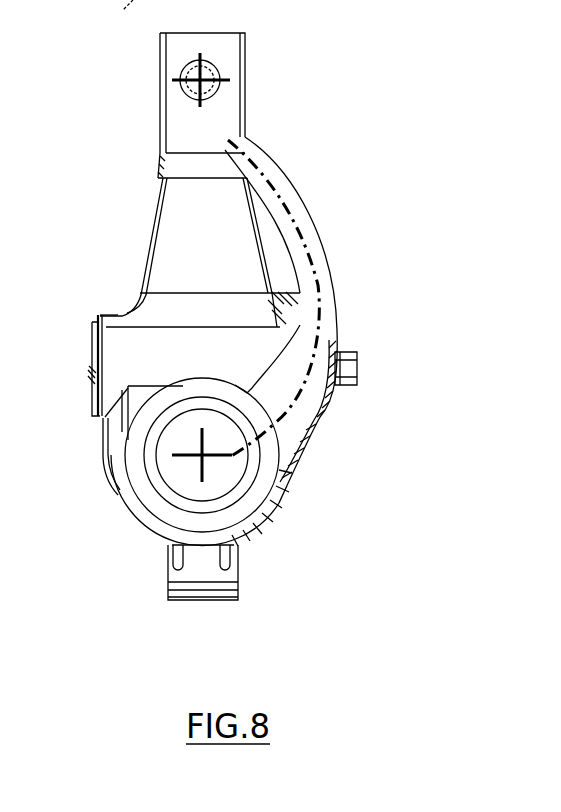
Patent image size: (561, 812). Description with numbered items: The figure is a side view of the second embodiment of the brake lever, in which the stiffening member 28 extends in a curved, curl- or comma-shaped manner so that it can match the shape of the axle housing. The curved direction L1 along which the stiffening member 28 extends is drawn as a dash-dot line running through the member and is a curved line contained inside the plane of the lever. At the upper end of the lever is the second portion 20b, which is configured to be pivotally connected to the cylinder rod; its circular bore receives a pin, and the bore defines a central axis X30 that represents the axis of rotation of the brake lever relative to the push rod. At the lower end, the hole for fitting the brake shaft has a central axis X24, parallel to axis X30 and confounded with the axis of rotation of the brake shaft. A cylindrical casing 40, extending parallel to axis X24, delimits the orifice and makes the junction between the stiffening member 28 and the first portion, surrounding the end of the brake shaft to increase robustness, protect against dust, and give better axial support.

The casing 40 is at (167, 102).
The central axis of bore X30 is at (203, 66).
The second portion 20b is at (180, 120).
The central axis of hole X24 is at (204, 452).
The stiffening member 28 is at (316, 247).
The direction L1 is at (318, 300).